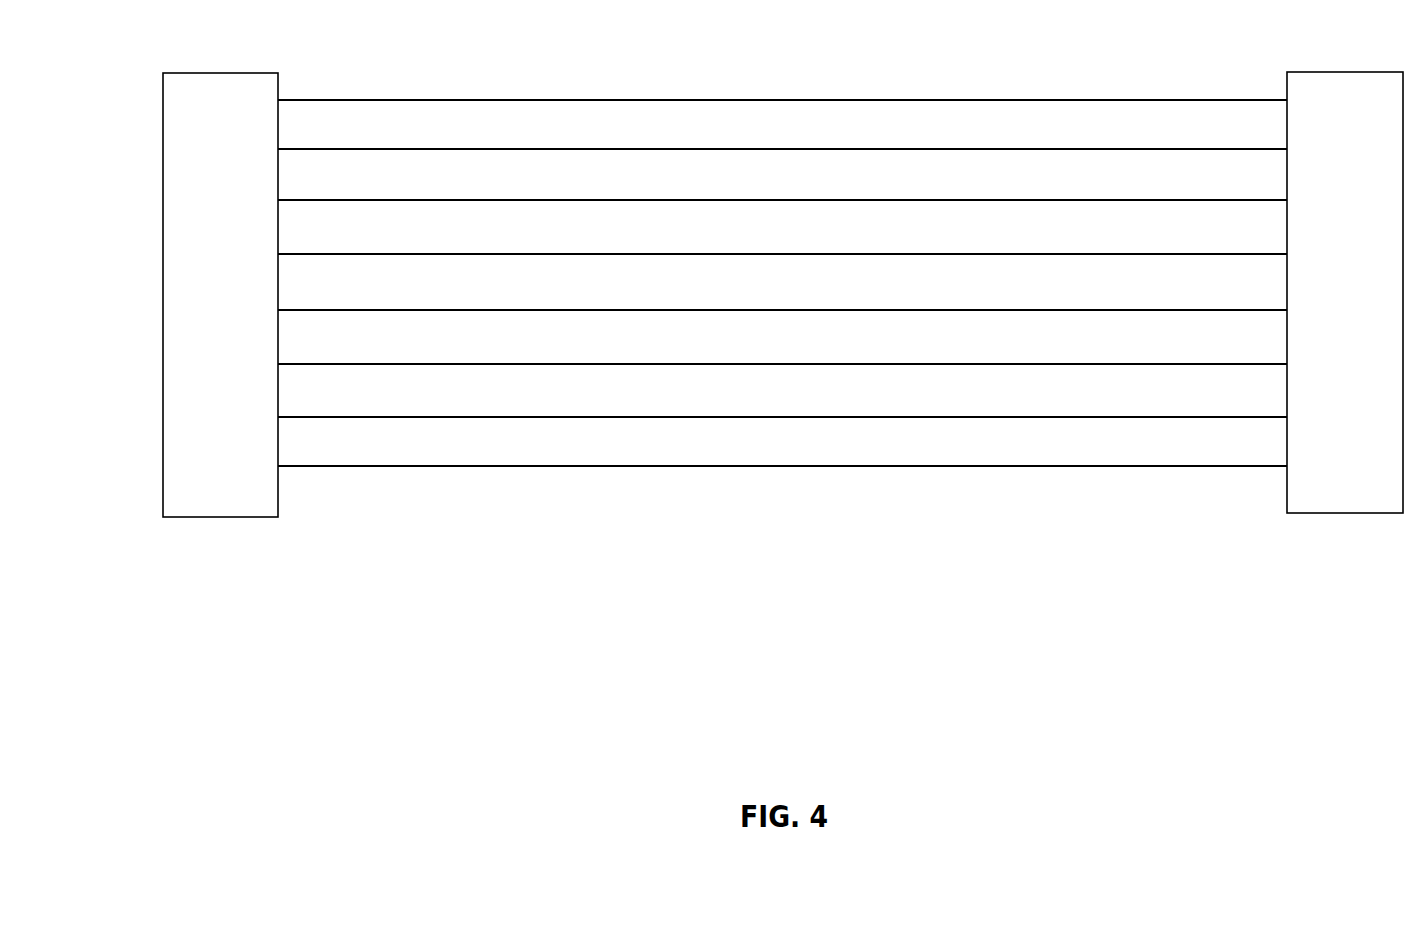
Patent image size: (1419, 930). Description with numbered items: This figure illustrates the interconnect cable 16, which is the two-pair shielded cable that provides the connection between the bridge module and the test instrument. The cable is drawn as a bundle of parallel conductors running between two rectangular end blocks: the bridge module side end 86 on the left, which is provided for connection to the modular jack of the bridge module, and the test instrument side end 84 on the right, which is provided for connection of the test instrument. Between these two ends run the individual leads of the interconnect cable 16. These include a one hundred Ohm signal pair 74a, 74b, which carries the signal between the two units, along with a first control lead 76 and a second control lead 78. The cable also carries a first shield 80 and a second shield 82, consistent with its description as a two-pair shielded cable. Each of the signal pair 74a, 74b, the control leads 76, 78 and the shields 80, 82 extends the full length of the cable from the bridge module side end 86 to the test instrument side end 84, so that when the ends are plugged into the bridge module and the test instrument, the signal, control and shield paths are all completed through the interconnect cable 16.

The interconnect cable 16 is at (870, 640).
The signal pair lead 74a is at (663, 255).
The signal pair lead 74b is at (625, 311).
The first control lead 76 is at (462, 420).
The second control lead 78 is at (441, 148).
The first shield 80 is at (533, 198).
The second shield 82 is at (525, 365).
The test instrument side end 84 is at (1355, 513).
The bridge module side end 86 is at (217, 517).